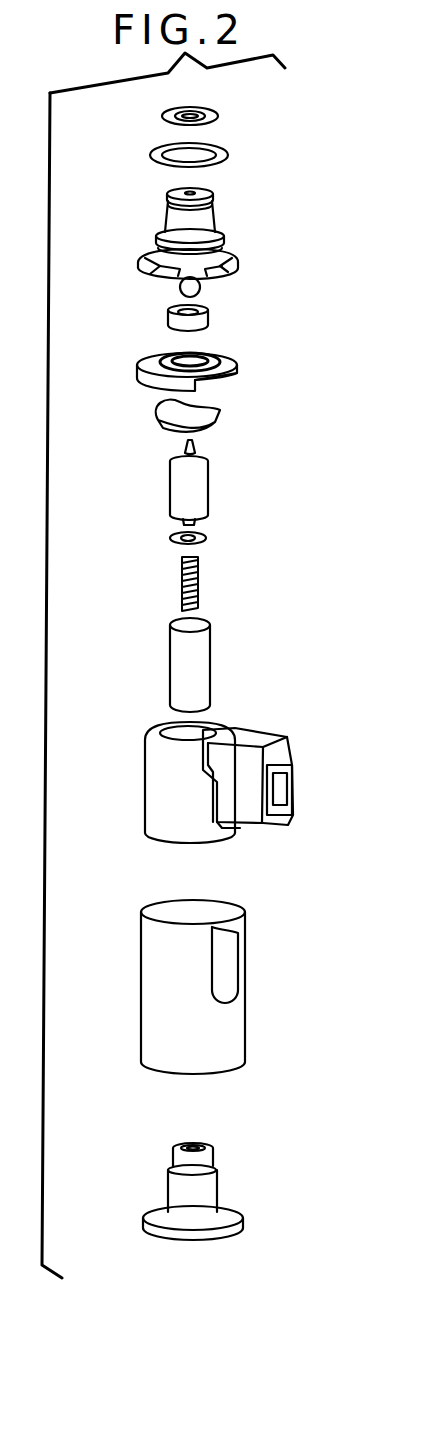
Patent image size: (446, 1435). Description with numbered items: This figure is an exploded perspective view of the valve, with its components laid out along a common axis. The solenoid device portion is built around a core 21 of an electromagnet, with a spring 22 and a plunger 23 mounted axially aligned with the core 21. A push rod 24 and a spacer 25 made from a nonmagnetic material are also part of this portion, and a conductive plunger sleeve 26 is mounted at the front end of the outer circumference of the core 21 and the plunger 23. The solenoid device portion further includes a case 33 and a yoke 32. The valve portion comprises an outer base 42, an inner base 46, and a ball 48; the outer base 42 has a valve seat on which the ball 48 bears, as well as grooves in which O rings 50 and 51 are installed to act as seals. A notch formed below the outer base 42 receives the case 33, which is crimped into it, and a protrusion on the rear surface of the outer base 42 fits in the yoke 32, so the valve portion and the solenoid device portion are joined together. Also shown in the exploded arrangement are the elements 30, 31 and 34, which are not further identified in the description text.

The O ring 50 is at (218, 116).
The O ring 51 is at (230, 155).
The outer base 42 is at (232, 218).
The ball 48 is at (200, 288).
The inner base 46 is at (220, 315).
The yoke 32 is at (245, 362).
The curved plate 31 is at (228, 410).
The push rod 24 is at (200, 449).
The plunger 23 is at (212, 495).
The spacer 25 is at (212, 538).
The spring 22 is at (205, 587).
The conductive plunger sleeve 26 is at (228, 660).
The housing 30 is at (138, 782).
The connector 34 is at (300, 752).
The case 33 is at (258, 1015).
The core 21 is at (240, 1195).